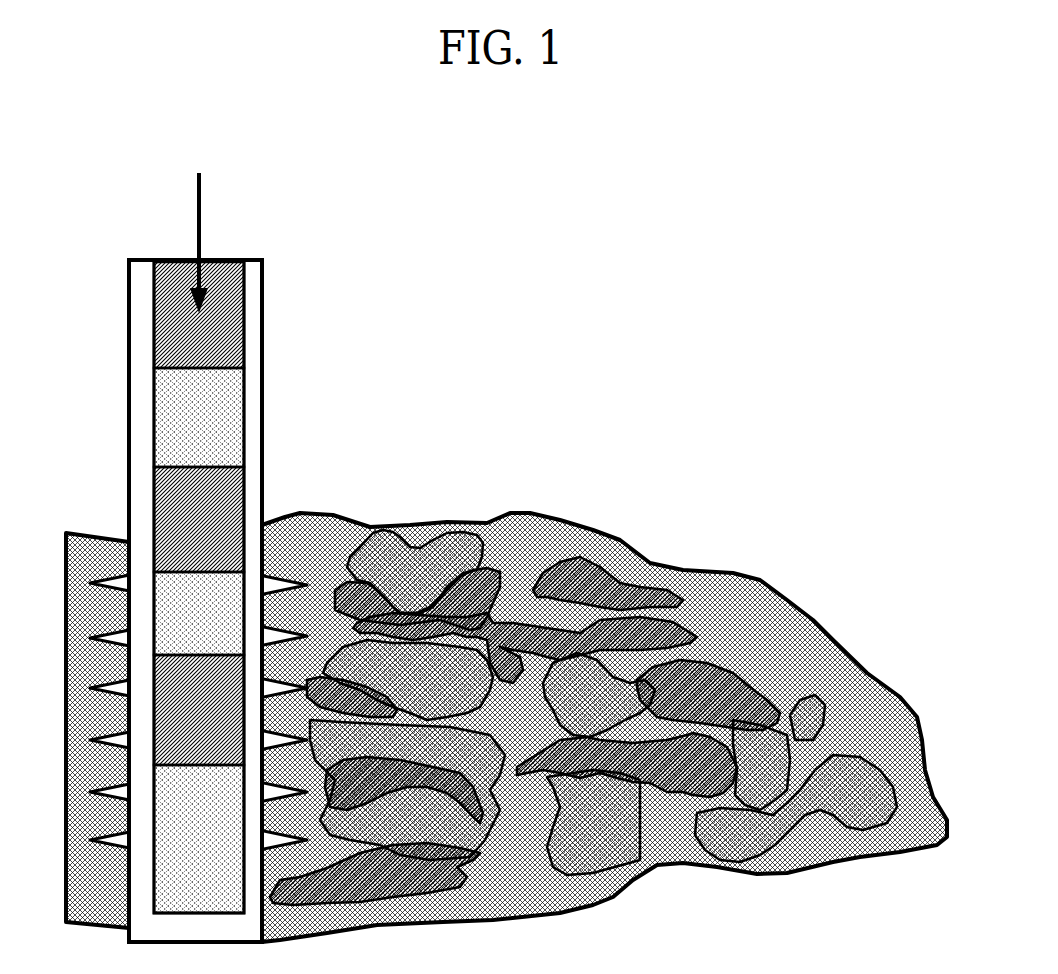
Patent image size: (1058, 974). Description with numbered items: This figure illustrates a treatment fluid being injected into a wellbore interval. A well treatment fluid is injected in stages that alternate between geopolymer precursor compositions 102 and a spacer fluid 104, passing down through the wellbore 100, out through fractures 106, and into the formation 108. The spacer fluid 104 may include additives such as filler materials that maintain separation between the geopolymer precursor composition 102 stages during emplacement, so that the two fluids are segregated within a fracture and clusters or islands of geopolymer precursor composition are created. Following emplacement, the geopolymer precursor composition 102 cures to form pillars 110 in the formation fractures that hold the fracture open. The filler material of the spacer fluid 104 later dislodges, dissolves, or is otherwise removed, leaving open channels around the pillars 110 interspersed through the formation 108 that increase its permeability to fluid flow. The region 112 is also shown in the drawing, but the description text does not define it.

The wellbore 100 is at (256, 275).
The geopolymer precursor composition 102 is at (172, 314).
The spacer fluid 104 is at (172, 426).
The fractures 106 is at (270, 578).
The formation 108 is at (740, 606).
The pillars 110 is at (737, 692).
The high permeability region / fracture 112 is at (770, 752).